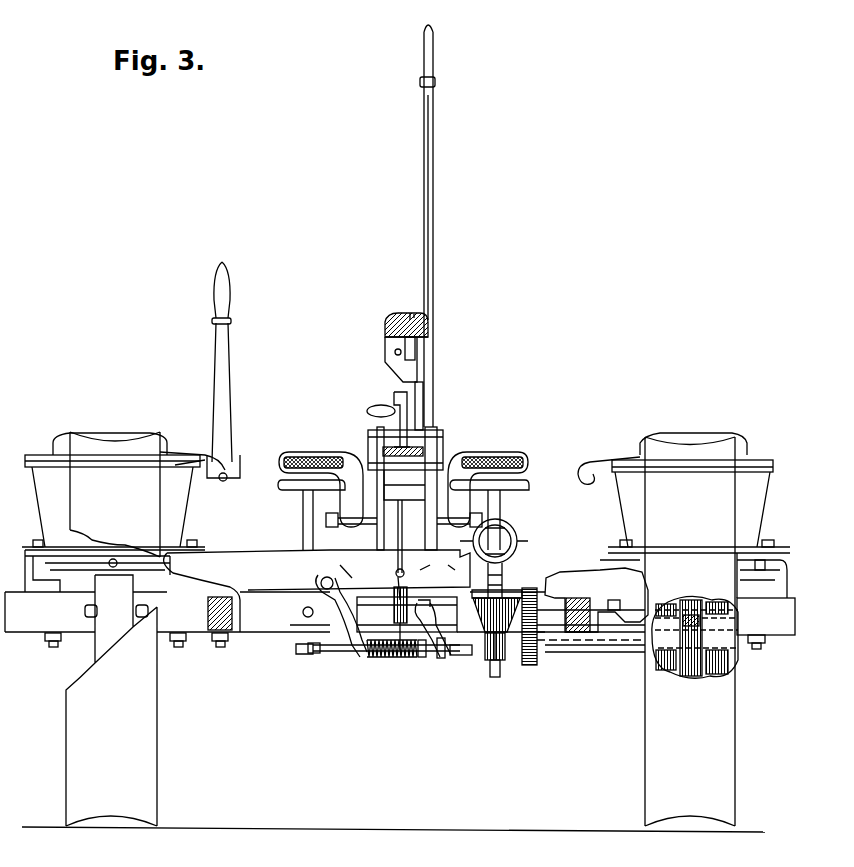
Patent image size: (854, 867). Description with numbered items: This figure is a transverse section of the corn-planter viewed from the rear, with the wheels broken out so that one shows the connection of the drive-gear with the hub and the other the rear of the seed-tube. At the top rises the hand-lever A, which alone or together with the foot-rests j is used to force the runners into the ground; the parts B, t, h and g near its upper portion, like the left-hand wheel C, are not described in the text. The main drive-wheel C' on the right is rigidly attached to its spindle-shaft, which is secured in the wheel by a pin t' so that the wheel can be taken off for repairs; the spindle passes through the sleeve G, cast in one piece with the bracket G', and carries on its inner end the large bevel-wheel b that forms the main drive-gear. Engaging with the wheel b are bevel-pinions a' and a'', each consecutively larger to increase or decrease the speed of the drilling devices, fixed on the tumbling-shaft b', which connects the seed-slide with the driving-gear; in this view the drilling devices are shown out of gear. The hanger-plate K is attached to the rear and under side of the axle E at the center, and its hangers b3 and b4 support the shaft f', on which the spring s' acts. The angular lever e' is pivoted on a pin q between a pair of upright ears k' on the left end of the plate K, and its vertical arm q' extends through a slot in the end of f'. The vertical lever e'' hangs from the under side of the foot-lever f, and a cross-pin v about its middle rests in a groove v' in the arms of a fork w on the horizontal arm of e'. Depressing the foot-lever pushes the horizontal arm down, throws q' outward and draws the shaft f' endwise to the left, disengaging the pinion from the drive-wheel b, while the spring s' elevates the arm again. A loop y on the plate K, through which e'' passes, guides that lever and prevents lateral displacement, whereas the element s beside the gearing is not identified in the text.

The hand-lever A is at (424, 218).
The slide block B is at (385, 343).
The set screw t is at (426, 329).
The bracket h is at (394, 403).
The thumb knob g is at (367, 410).
The foot-rests j is at (305, 456).
The hopper / paper roll C is at (124, 494).
The main drive-wheel C' is at (402, 631).
The axle E is at (317, 591).
The hanger-plate K is at (407, 614).
The pin q is at (295, 603).
The vertical arm q' is at (293, 640).
The upright ears k' is at (312, 577).
The hanger b3 is at (360, 655).
The hanger b4 is at (444, 656).
The spring s' is at (384, 656).
The shaft f' is at (297, 657).
The foot-lever f is at (379, 538).
The cross-pin v is at (389, 574).
The groove v' is at (419, 610).
The angular lever e' is at (339, 562).
The vertical lever e'' is at (426, 558).
The fork w is at (450, 559).
The loop y is at (421, 603).
The gear housing s is at (501, 558).
The bevel-pinion a'' is at (485, 637).
The tumbling-shaft b' is at (494, 663).
The bevel-pinion a' is at (507, 664).
The bevel-wheel b is at (540, 633).
The bracket G' is at (596, 600).
The sleeve G is at (595, 661).
The pin t' is at (758, 634).